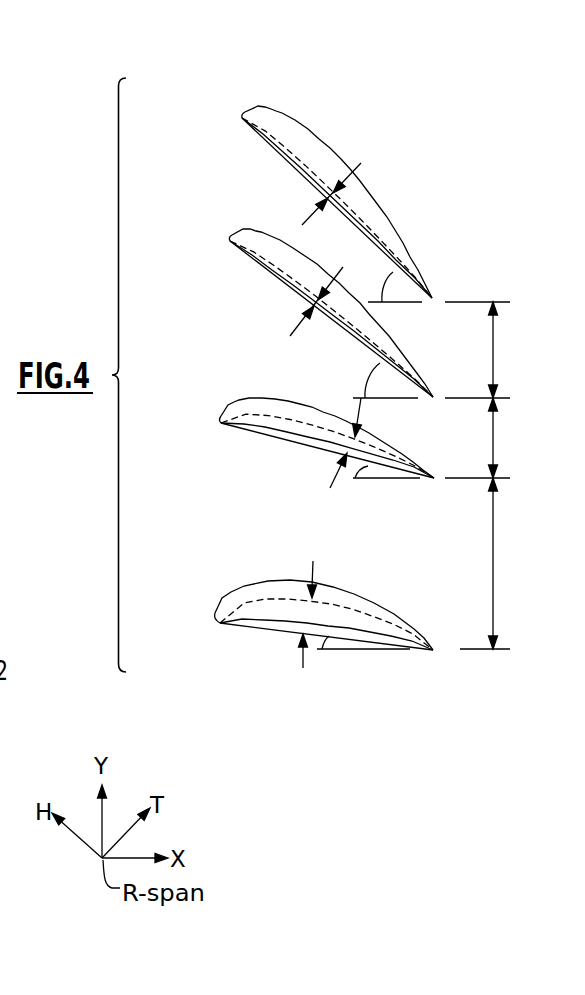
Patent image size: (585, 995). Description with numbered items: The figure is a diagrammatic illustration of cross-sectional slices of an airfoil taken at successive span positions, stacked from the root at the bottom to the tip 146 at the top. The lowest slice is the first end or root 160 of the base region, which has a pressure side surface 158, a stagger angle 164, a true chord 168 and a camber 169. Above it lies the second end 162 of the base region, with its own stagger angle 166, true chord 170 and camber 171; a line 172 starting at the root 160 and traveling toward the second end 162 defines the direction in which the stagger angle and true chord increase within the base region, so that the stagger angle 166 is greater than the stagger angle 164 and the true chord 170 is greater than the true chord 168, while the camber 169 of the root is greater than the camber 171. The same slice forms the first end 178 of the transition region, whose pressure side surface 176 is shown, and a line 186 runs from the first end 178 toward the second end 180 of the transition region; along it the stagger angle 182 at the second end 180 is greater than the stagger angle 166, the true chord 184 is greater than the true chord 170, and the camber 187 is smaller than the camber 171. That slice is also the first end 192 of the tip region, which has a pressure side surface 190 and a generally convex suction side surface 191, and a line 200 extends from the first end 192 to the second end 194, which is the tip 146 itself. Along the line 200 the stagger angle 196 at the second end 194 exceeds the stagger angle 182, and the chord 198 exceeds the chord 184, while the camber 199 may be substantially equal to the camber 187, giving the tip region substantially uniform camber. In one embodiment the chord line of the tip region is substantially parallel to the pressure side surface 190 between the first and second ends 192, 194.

The tip 146 is at (278, 112).
The pressure side surface 158 is at (231, 627).
The first end 160 is at (229, 590).
The second end 162 is at (226, 413).
The stagger angle 164 is at (327, 637).
The stagger angle 166 is at (358, 478).
The true chord 168 is at (284, 636).
The camber 169 is at (313, 561).
The true chord 170 is at (248, 427).
The camber 171 is at (344, 430).
The line 172 is at (495, 565).
The pressure side surface 176 is at (253, 266).
The first end 178 is at (258, 398).
The second end 180 is at (231, 239).
The stagger angle 182 is at (378, 364).
The true chord 184 is at (290, 294).
The line 186 is at (496, 443).
The camber 187 is at (370, 303).
The pressure side surface 190 is at (264, 142).
The suction side surface 191 is at (337, 155).
The first end 192 is at (236, 232).
The second end 194 is at (263, 108).
The stagger angle 196 is at (381, 293).
The chord 198 is at (309, 184).
The camber 199 is at (356, 176).
The line 200 is at (495, 355).